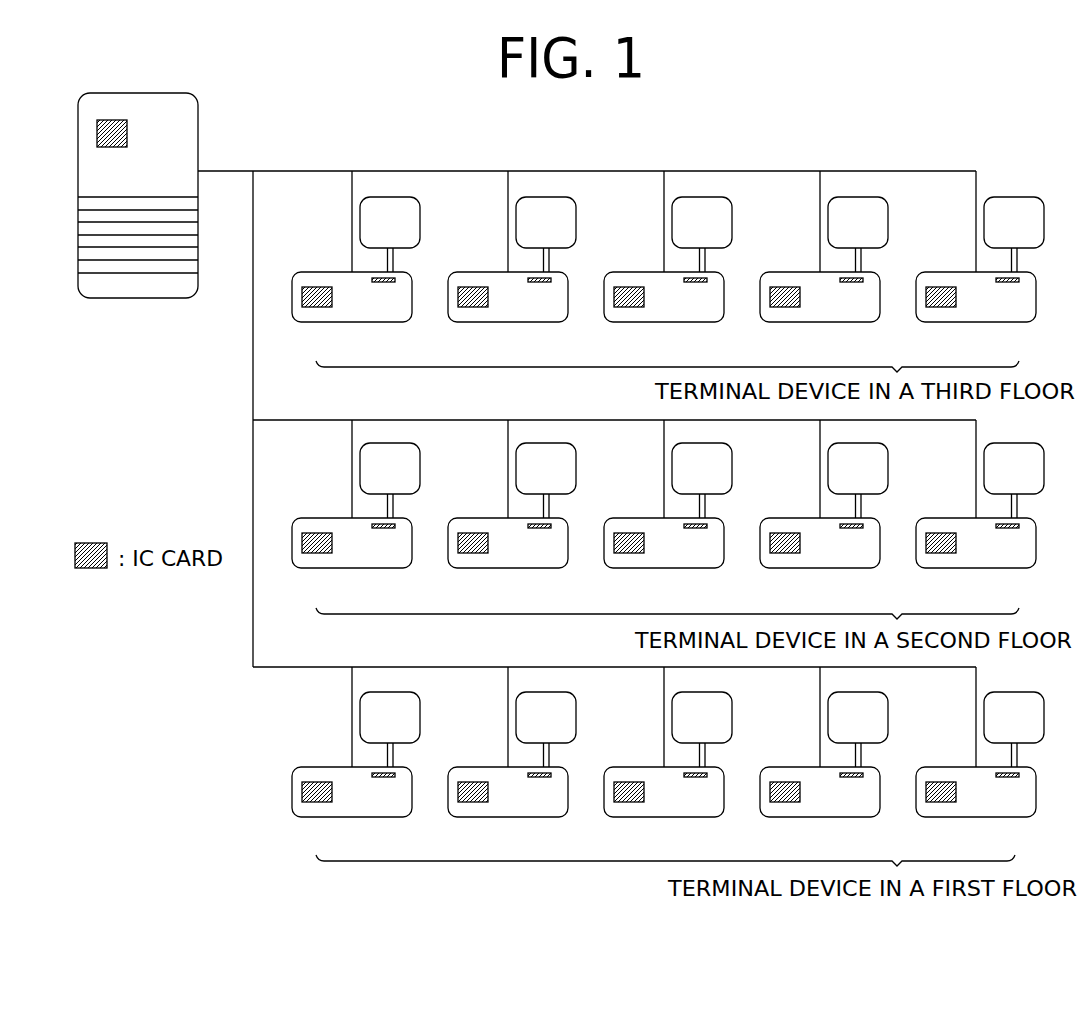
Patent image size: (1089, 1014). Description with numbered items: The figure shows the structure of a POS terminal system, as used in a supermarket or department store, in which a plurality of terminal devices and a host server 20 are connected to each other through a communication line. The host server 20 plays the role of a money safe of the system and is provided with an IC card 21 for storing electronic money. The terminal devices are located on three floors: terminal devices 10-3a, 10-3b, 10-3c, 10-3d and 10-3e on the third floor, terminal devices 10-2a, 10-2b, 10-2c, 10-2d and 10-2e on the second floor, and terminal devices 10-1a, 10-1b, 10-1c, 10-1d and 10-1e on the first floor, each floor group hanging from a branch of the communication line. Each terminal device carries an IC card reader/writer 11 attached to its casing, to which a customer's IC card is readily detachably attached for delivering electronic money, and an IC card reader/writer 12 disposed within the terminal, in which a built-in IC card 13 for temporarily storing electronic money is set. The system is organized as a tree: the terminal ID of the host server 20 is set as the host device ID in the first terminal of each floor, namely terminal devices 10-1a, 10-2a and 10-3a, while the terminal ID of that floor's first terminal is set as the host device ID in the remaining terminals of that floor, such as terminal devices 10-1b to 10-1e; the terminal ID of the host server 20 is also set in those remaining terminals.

The host server 20 is at (126, 212).
The IC card 21 is at (112, 118).
The terminal device 10-3a is at (356, 265).
The terminal device 10-3b is at (512, 265).
The terminal device 10-3c is at (668, 265).
The terminal device 10-3d is at (824, 265).
The terminal device 10-3e is at (980, 265).
The terminal device 10-2a is at (356, 512).
The terminal device 10-2b is at (512, 512).
The terminal device 10-2c is at (668, 512).
The terminal device 10-2d is at (824, 512).
The terminal device 10-2e is at (980, 512).
The terminal device 10-1a is at (364, 760).
The terminal device 10-1b is at (512, 760).
The terminal device 10-1c is at (668, 760).
The terminal device 10-1d is at (824, 760).
The terminal device 10-1e is at (980, 760).
The IC card reader/writer 11 is at (394, 773).
The IC card reader/writer 12 is at (311, 781).
The IC card 13 is at (296, 758).